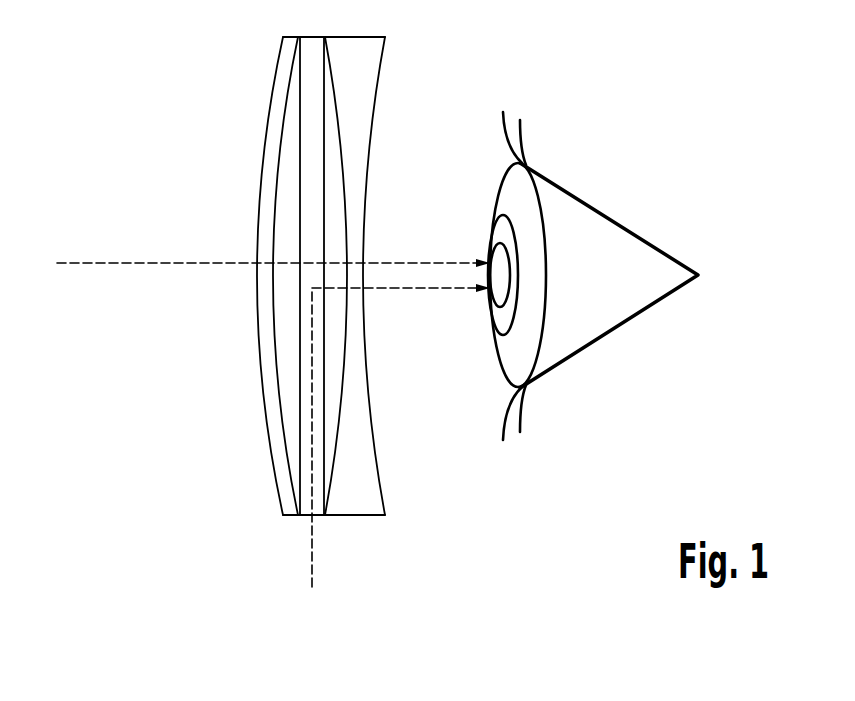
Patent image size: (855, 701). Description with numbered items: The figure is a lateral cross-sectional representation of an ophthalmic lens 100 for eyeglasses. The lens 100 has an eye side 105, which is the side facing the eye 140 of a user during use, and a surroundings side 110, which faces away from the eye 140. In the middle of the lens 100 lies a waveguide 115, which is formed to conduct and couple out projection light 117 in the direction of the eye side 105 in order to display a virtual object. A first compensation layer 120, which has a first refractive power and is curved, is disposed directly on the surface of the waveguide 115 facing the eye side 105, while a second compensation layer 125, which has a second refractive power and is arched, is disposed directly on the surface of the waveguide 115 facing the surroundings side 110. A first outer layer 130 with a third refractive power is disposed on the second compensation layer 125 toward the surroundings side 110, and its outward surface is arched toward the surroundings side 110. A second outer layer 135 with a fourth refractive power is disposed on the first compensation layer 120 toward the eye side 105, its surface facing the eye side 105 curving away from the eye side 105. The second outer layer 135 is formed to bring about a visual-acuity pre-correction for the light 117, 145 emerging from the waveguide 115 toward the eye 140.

The ophthalmic lens 100 is at (309, 259).
The eye side 105 is at (396, 276).
The surroundings side 110 is at (224, 276).
The waveguide 115 is at (307, 216).
The projection light 117 is at (312, 548).
The first compensation layer 120 is at (332, 454).
The second compensation layer 125 is at (280, 163).
The first outer layer 130 is at (270, 118).
The second outer layer 135 is at (363, 497).
The eye 140 is at (602, 242).
The light 145 is at (93, 266).